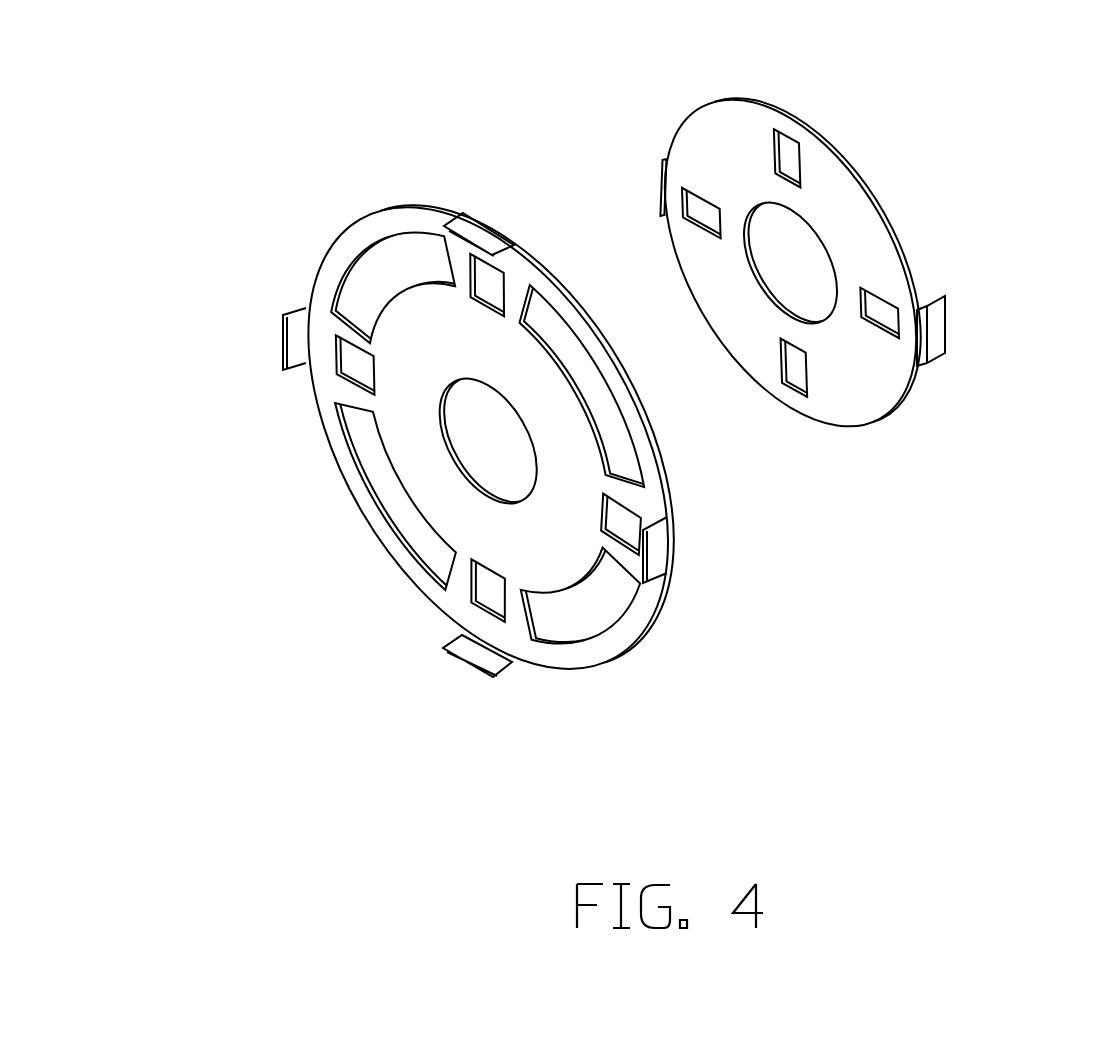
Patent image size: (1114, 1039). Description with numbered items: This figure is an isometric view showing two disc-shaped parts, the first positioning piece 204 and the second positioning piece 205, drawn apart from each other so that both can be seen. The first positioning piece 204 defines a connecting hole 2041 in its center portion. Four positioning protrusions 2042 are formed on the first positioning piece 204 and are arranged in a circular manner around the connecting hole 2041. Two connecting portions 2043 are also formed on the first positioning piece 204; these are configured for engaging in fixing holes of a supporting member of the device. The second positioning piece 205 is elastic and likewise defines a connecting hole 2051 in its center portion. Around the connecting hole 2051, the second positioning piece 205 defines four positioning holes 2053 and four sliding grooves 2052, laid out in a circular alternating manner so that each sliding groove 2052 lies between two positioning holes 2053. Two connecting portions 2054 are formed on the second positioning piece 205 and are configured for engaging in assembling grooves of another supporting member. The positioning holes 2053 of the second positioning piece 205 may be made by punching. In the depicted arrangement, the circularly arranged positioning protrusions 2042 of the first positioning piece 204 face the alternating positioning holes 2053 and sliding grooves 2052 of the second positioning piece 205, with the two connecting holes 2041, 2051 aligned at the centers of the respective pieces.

The first positioning piece 204 is at (858, 200).
The connecting hole 2041 is at (820, 263).
The positioning protrusions 2042 is at (788, 162).
The connecting portions 2043 is at (937, 327).
The second positioning piece 205 is at (607, 642).
The connecting hole 2051 is at (470, 433).
The sliding grooves 2052 is at (408, 252).
The positioning holes 2053 is at (345, 374).
The connecting portions 2054 is at (473, 653).